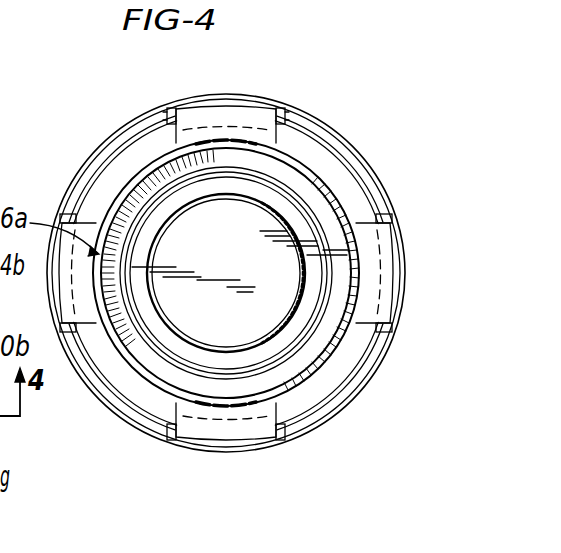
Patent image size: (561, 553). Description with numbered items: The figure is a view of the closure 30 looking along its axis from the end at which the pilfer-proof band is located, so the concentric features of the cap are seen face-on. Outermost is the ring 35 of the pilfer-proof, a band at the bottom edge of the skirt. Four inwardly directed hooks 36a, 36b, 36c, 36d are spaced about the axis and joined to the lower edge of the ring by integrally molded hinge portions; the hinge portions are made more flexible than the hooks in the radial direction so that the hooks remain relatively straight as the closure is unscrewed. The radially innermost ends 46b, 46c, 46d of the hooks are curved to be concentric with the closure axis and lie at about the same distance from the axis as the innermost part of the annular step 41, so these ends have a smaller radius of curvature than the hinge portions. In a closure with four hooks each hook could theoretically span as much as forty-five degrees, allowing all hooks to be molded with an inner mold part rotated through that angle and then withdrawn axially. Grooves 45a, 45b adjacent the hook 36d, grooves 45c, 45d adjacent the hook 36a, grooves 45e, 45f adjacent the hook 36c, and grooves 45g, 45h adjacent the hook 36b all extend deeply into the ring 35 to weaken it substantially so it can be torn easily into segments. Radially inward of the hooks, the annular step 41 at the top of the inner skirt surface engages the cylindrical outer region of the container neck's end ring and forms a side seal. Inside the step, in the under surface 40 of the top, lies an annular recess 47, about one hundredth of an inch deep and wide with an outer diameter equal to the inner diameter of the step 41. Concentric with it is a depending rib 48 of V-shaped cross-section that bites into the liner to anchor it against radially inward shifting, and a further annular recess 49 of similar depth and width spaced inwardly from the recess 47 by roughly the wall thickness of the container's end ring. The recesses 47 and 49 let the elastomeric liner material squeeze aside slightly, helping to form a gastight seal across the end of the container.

The closure 30 is at (165, 96).
The ring 35 is at (143, 428).
The hook 36a is at (72, 232).
The hook 36b is at (383, 240).
The hook 36c is at (242, 435).
The hook 36d is at (233, 113).
The under surface of the top 40 is at (200, 229).
The annular step 41 is at (315, 386).
The groove 45a is at (166, 110).
The groove 45b is at (282, 114).
The groove 45c is at (74, 326).
The groove 45d is at (68, 215).
The groove 45e is at (282, 436).
The groove 45f is at (173, 438).
The groove 45g is at (381, 214).
The groove 45h is at (381, 332).
The radially innermost end of hook 46b is at (360, 273).
The radially innermost end of hook 46c is at (242, 410).
The radially innermost end of hook 46d is at (216, 146).
The annular recess 47 is at (323, 361).
The depending rib 48 is at (161, 356).
The annular recess 49 is at (288, 201).